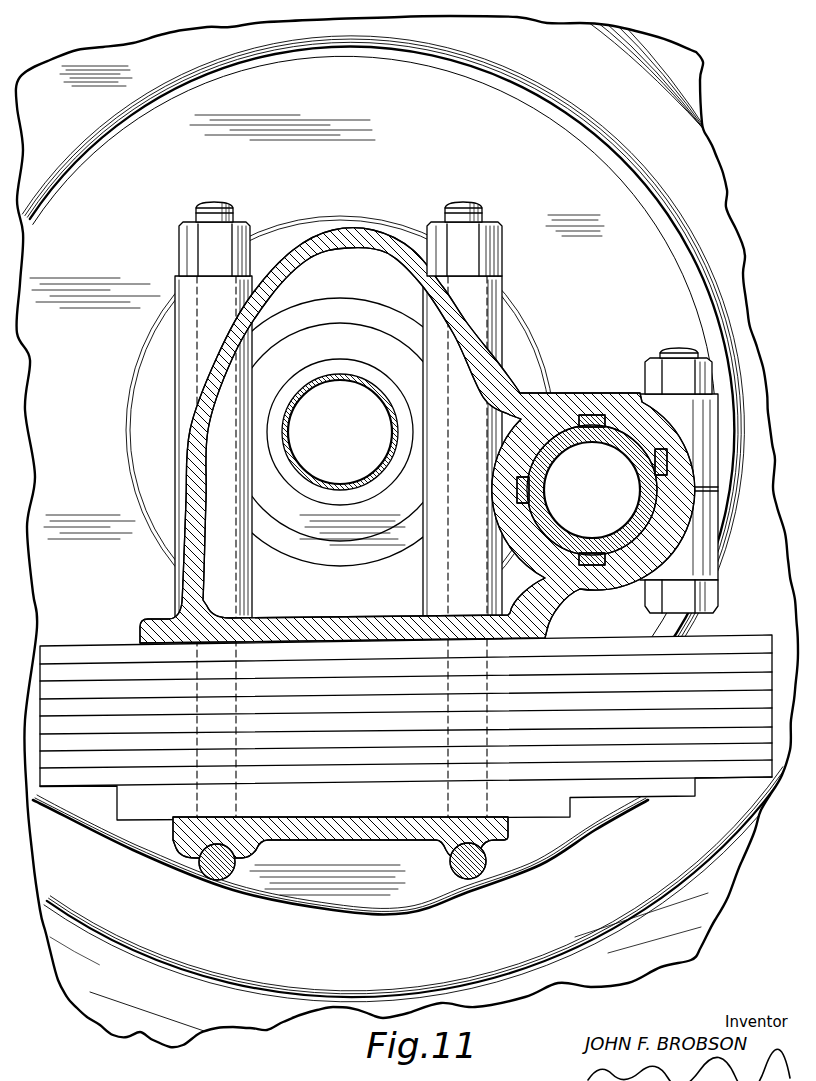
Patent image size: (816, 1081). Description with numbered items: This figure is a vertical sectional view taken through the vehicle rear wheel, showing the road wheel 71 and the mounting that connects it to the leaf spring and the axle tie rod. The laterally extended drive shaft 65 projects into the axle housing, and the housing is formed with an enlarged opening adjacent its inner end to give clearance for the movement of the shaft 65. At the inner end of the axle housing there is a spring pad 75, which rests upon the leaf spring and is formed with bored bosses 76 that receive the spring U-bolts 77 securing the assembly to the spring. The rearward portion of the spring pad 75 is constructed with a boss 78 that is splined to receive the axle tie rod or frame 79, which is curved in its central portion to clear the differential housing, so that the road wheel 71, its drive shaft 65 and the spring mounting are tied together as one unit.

The drive shaft 65 is at (331, 384).
The road wheel 71 is at (667, 277).
The spring pad 75 is at (173, 617).
The bored bosses 76 is at (477, 314).
The spring U-bolts 77 is at (463, 203).
The boss 78 is at (593, 407).
The axle tie rod or frame 79 is at (540, 463).